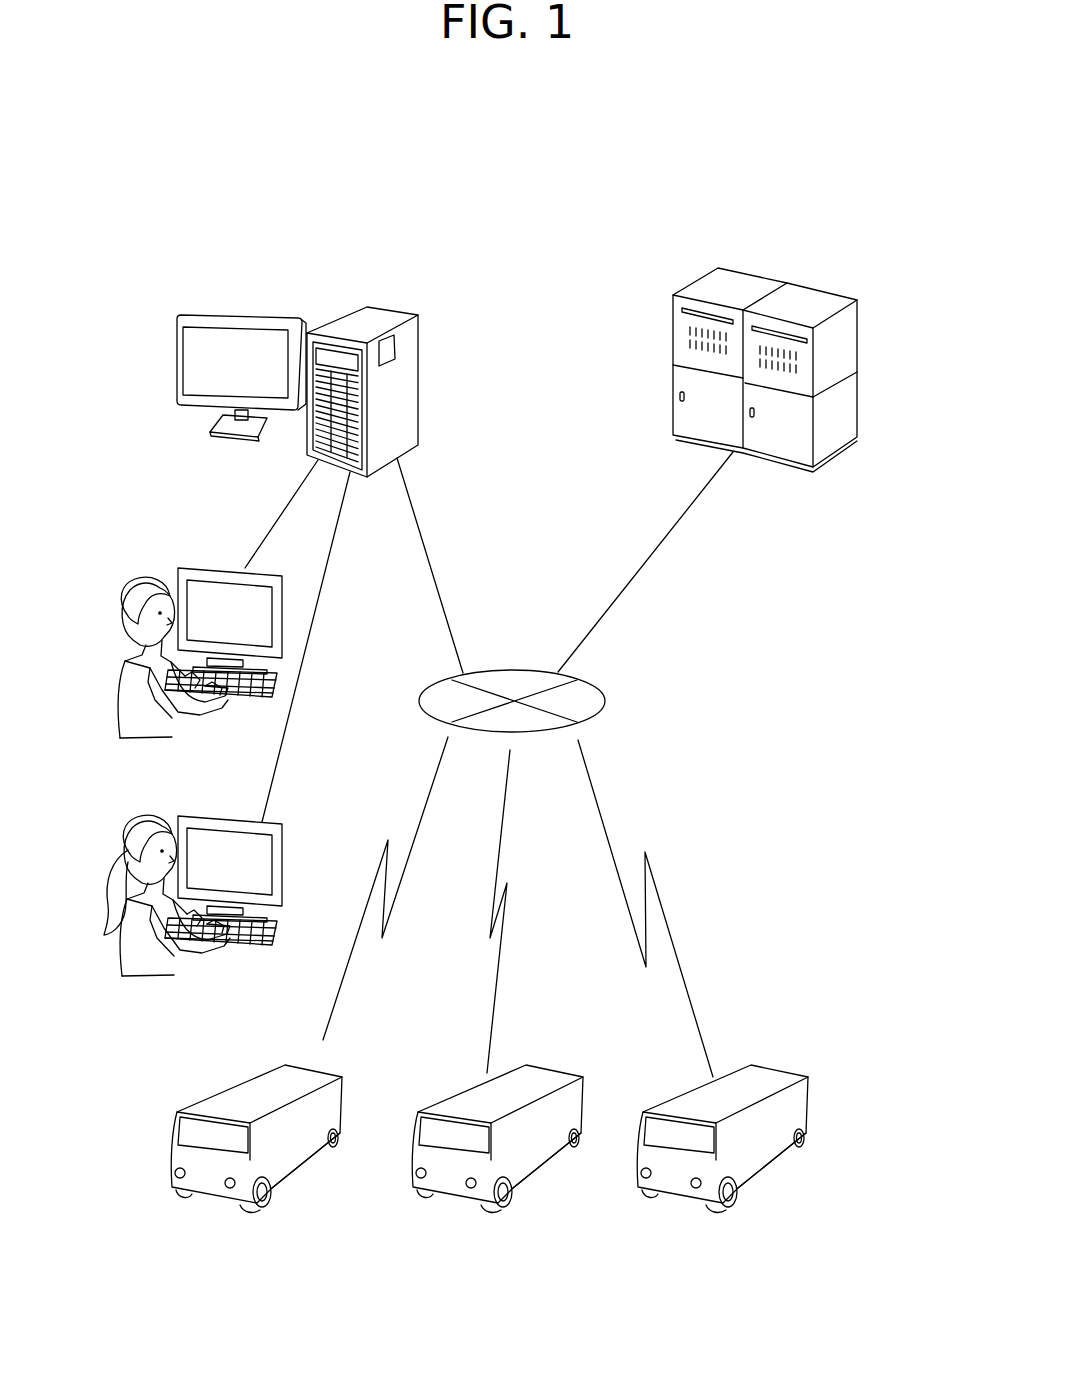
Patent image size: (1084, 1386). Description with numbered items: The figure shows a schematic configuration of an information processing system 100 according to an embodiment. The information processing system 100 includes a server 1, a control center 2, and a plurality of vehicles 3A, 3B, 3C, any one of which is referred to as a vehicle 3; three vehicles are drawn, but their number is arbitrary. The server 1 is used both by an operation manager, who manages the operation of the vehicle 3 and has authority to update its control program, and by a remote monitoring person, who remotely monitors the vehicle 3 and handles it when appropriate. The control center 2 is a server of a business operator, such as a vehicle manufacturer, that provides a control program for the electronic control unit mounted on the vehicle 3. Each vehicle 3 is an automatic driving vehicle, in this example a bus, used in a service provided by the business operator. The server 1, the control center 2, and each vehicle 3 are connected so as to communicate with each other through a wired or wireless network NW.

The information processing system 100 is at (207, 184).
The server 1 is at (369, 258).
The control center 2 is at (832, 260).
The network NW is at (590, 682).
The vehicle 3 is at (238, 1312).
The vehicle 3A is at (282, 1251).
The vehicle 3B is at (504, 1251).
The vehicle 3C is at (728, 1251).